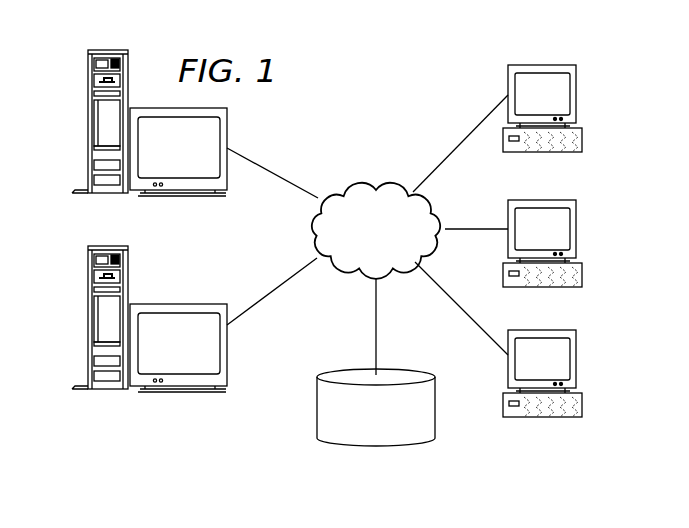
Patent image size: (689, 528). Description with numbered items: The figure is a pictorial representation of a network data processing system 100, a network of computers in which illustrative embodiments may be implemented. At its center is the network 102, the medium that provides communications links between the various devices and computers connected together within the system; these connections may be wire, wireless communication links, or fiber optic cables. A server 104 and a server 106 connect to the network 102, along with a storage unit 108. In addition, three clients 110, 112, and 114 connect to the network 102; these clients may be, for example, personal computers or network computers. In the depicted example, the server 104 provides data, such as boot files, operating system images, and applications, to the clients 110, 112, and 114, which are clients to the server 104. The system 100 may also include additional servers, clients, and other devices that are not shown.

The network data processing system 100 is at (424, 77).
The network 102 is at (350, 183).
The server 104 is at (88, 122).
The server 106 is at (88, 318).
The storage unit 108 is at (358, 446).
The client 110 is at (576, 95).
The client 112 is at (576, 230).
The client 114 is at (576, 360).